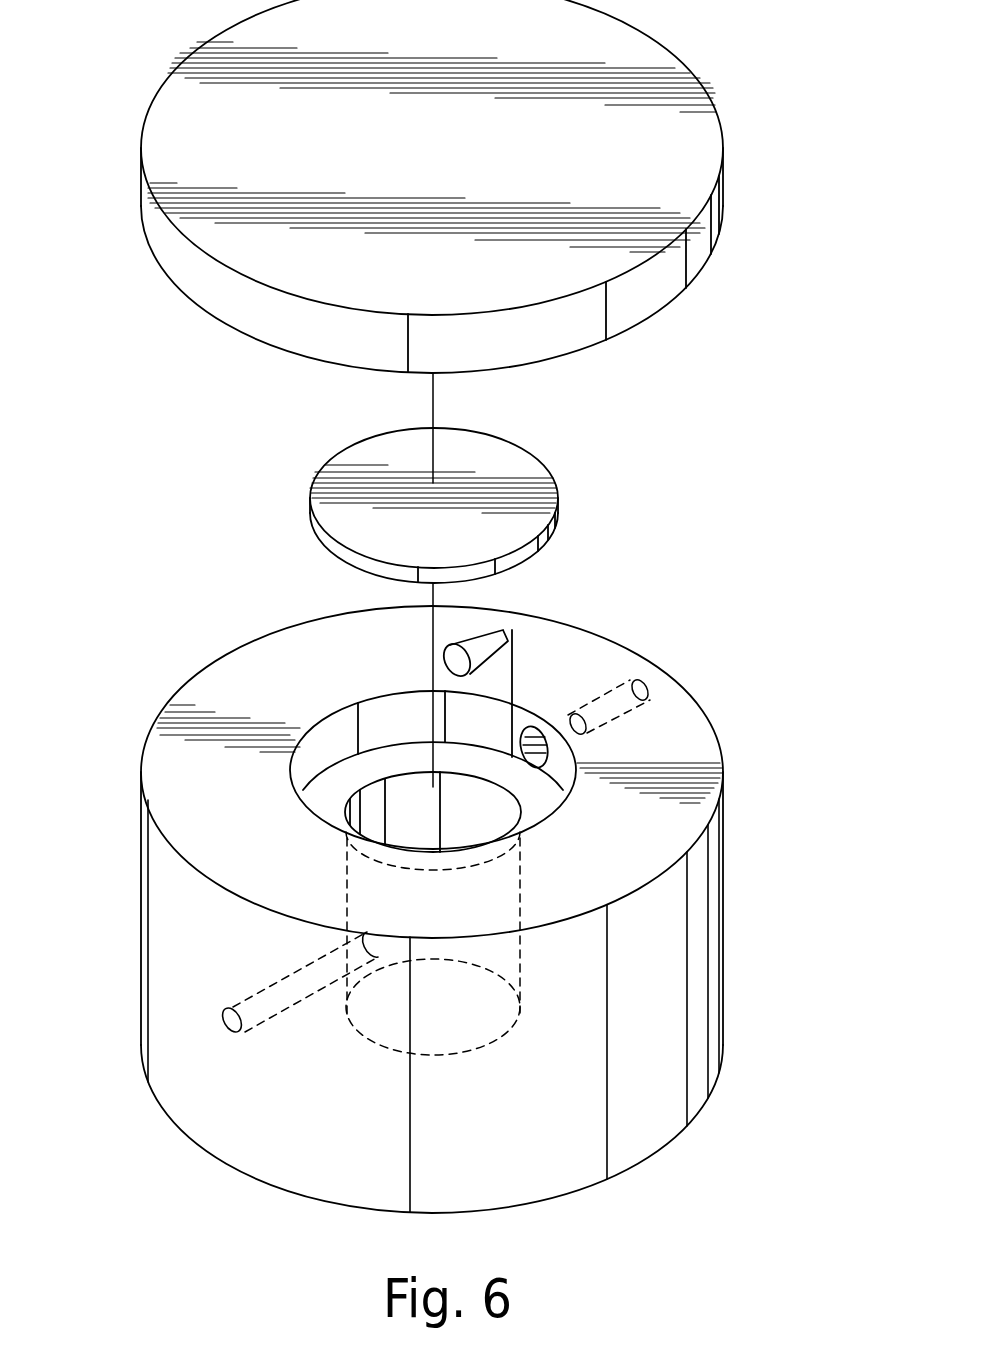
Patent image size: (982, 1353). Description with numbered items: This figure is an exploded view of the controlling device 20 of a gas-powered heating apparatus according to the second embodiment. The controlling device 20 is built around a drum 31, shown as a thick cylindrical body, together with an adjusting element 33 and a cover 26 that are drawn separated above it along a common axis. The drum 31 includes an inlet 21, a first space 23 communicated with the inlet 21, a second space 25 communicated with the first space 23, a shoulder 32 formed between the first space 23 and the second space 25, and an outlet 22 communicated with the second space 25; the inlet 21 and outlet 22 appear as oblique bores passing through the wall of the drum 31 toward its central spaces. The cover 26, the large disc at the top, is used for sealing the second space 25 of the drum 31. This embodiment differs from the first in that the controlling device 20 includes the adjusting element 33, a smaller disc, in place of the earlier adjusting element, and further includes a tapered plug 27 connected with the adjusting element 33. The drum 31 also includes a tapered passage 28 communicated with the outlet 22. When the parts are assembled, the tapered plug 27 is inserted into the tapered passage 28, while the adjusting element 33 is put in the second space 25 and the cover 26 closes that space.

The controlling device 20 is at (707, 1118).
The inlet 21 is at (240, 1008).
The outlet 22 is at (652, 697).
The first space 23 is at (485, 817).
The second space 25 is at (330, 750).
The cover 26 is at (672, 77).
The tapered plug 27 is at (497, 640).
The tapered passage 28 is at (552, 718).
The drum 31 is at (678, 963).
The shoulder 32 is at (520, 782).
The adjusting element 33 is at (530, 492).